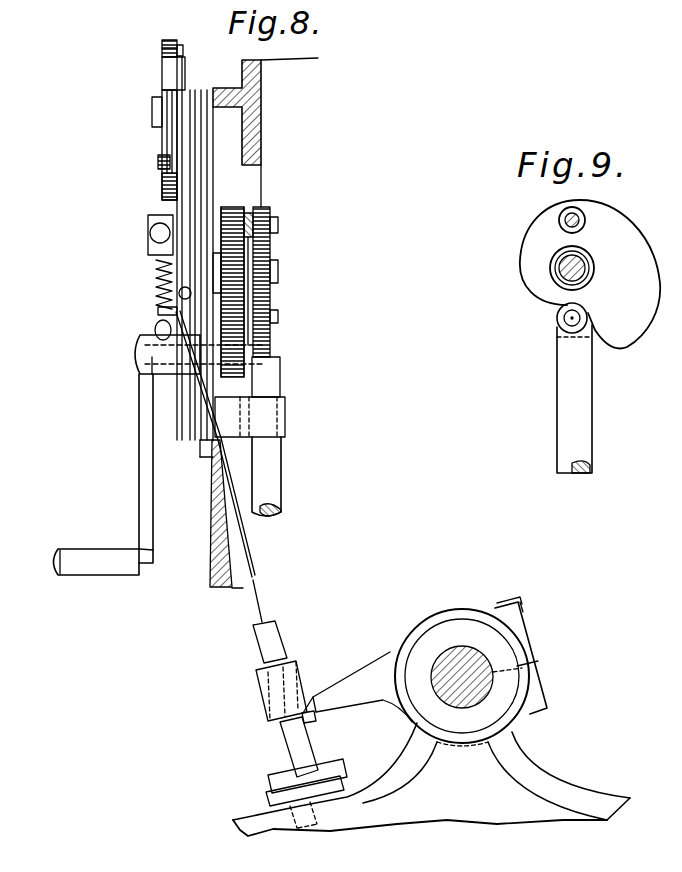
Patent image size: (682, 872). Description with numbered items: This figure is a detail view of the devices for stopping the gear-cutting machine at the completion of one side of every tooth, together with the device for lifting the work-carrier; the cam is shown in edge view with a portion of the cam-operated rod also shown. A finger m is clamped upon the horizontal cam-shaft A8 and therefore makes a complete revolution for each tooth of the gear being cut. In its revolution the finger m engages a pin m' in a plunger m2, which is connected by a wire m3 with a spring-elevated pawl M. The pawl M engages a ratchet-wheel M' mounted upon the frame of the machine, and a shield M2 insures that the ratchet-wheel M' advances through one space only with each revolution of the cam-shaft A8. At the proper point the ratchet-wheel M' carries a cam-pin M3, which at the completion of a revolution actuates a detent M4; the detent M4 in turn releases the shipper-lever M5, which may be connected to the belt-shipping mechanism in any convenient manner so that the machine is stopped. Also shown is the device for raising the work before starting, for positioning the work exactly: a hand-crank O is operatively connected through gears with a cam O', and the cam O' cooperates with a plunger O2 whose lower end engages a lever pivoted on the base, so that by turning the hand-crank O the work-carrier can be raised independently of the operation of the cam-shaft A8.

In FIG. 8, the spring-elevated pawl M is at (143, 146).
In FIG. 8, the ratchet-wheel M' is at (138, 49).
In FIG. 8, the shield M2 is at (183, 68).
In FIG. 8, the cam-pin M3 is at (178, 46).
In FIG. 8, the detent M4 is at (208, 135).
In FIG. 8, the shipper-lever M5 is at (156, 240).
In FIG. 8, the hand-crank O is at (181, 391).
In FIG. 8, the cam O' is at (276, 285).
In FIG. 9, the cam O' is at (590, 274).
In FIG. 8, the plunger O2 is at (272, 386).
In FIG. 9, the plunger O2 is at (580, 415).
In FIG. 8, the finger m is at (357, 686).
In FIG. 8, the pin m' is at (329, 729).
In FIG. 8, the plunger m2 is at (290, 748).
In FIG. 8, the wire m3 is at (253, 590).
In FIG. 8, the cam-shaft A8 is at (450, 655).